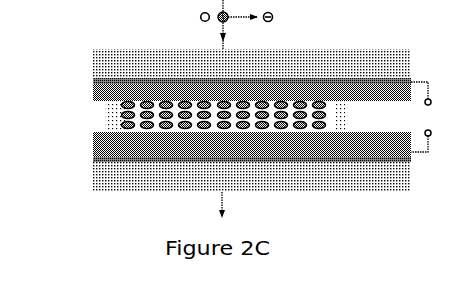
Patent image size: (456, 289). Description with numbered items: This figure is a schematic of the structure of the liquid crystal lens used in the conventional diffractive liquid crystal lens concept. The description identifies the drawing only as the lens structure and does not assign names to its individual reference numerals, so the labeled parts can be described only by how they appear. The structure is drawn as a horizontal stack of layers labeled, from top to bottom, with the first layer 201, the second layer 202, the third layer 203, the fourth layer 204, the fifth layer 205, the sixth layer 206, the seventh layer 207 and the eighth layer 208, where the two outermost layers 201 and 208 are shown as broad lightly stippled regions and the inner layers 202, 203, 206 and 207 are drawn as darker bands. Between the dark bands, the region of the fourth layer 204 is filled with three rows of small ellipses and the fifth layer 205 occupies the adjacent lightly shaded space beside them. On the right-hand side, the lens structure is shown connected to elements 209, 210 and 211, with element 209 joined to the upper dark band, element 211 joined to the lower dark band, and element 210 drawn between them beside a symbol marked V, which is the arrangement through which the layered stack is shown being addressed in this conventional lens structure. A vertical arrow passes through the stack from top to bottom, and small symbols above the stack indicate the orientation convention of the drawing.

The substrate layer 201 is at (91, 57).
The electrode layer 202 is at (91, 80).
The alignment layer 203 is at (91, 92).
The liquid crystal molecules 204 is at (124, 110).
The liquid crystal layer 205 is at (105, 125).
The alignment layer 206 is at (91, 143).
The electrode layer 207 is at (91, 157).
The substrate layer 208 is at (91, 185).
The electrode terminal 209 is at (430, 77).
The voltage source 210 is at (438, 117).
The electrode terminal 211 is at (433, 147).